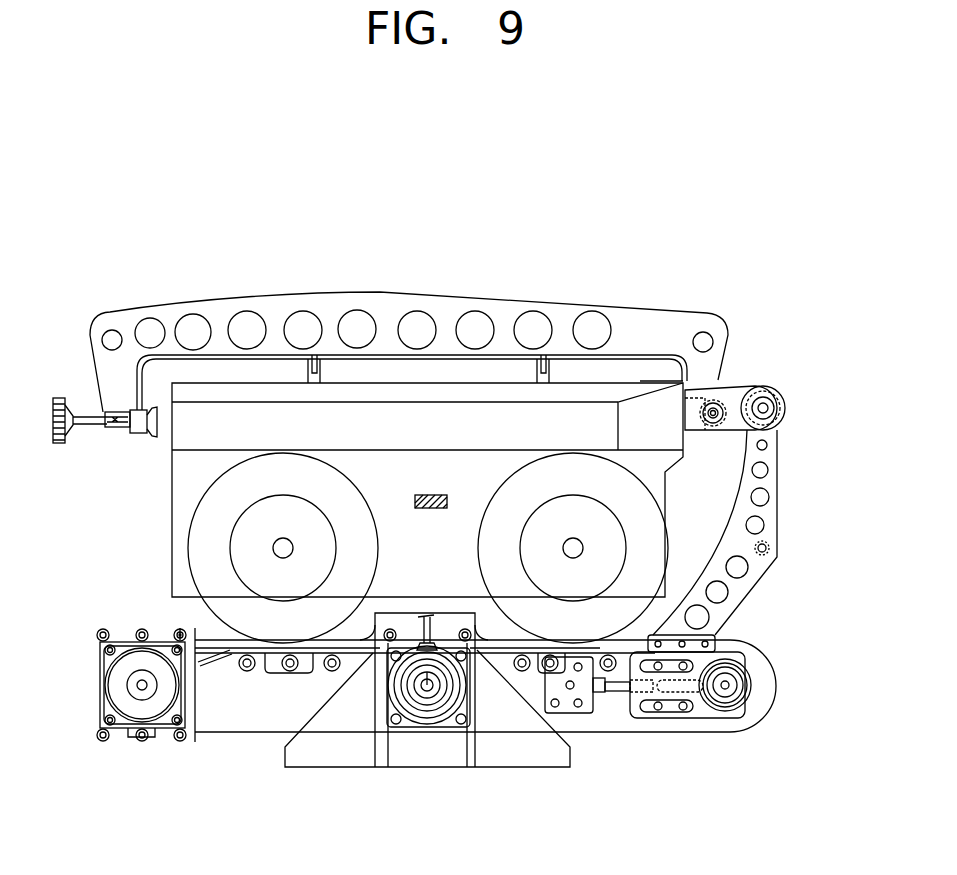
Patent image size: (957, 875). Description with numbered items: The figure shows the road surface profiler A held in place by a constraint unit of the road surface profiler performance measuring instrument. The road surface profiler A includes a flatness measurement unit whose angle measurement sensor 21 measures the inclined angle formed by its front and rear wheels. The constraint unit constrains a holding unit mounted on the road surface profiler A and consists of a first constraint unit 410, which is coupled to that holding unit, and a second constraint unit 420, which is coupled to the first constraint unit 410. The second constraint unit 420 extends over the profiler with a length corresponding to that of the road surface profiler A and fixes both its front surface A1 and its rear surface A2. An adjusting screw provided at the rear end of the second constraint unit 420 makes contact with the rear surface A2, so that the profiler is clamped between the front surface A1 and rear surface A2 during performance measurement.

The second constraint unit 420 is at (500, 310).
The road surface profiler A is at (351, 430).
The angle measurement sensor 21 is at (434, 493).
The rear surface A2 is at (167, 482).
The front surface A1 is at (667, 480).
The first constraint unit 410 is at (762, 513).